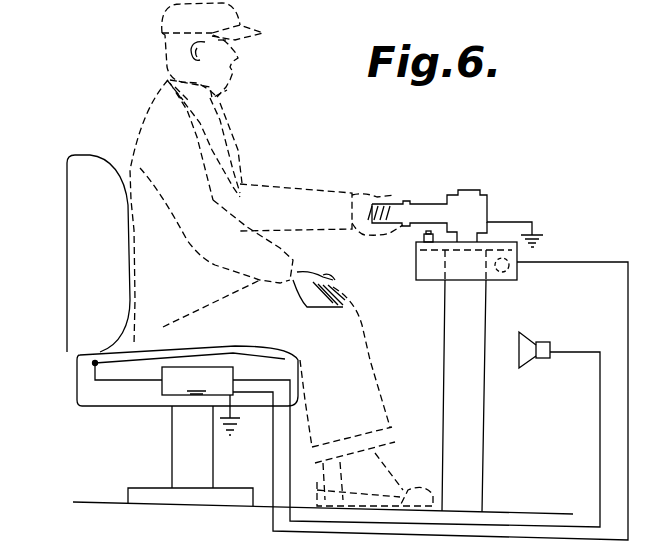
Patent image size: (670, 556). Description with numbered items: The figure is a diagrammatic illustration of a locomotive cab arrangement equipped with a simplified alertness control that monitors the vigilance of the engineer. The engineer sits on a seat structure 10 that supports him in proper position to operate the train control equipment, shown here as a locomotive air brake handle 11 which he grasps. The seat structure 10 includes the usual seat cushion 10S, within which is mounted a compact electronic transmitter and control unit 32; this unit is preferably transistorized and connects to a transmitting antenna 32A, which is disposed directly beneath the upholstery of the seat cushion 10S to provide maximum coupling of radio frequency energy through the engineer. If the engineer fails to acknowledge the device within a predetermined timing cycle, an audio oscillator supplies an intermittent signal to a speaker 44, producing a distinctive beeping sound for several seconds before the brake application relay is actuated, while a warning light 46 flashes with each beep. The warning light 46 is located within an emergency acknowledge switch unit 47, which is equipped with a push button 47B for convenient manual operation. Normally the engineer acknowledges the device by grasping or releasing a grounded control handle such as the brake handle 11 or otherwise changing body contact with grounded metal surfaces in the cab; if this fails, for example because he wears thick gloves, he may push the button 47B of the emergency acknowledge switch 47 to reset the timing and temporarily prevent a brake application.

The seat structure 10 is at (152, 330).
The seat cushion 10S is at (72, 388).
The electronic transmitter and control unit 32 is at (167, 399).
The transmitting antenna 32A is at (235, 345).
The locomotive air brake handle 11 is at (432, 203).
The emergency acknowledge switch unit 47 is at (463, 371).
The push button 47B is at (422, 235).
The warning light 46 is at (517, 268).
The speaker 44 is at (531, 338).